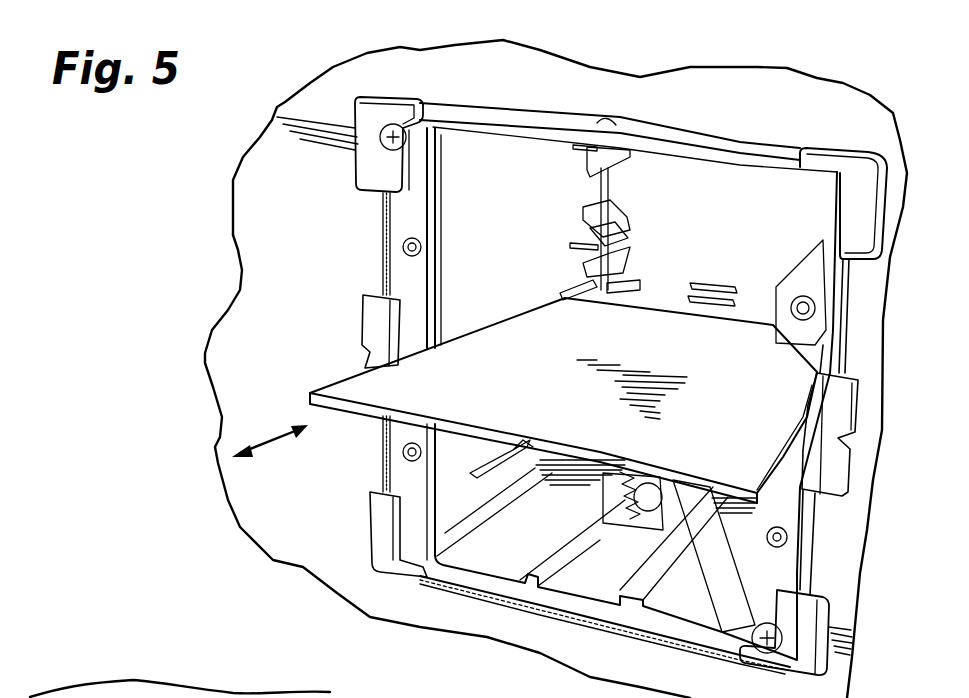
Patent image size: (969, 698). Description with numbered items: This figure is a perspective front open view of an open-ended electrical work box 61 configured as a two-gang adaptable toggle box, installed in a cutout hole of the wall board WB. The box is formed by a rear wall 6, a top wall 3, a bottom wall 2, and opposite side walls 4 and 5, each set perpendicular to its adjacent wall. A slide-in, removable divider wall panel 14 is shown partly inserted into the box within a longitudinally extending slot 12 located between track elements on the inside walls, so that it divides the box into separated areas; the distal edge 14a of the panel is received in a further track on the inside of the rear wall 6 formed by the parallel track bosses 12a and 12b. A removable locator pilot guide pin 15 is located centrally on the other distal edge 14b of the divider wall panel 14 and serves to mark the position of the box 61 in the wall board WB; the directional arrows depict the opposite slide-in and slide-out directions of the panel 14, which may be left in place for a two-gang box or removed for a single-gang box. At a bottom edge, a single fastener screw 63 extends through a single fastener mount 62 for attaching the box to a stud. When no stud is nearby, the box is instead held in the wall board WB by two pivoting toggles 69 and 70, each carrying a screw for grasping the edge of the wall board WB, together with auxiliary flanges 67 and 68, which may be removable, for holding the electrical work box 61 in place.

The bottom wall 2 is at (518, 549).
The top wall 3 is at (710, 135).
The side wall 4 is at (837, 352).
The side wall 5 is at (478, 194).
The rear wall 6 is at (723, 202).
The slot 12 is at (547, 295).
The track boss 12a is at (722, 283).
The track boss 12b is at (710, 311).
The slide-in removable divider wall panel 14 is at (305, 390).
The distal edge 14a is at (645, 290).
The distal edge 14b is at (353, 412).
The pilot guide pin 15 is at (487, 437).
The electrical work box 61 is at (442, 97).
The fastener mount 62 is at (680, 500).
The fastener screw 63 is at (617, 523).
The auxiliary flange 67 is at (373, 327).
The auxiliary flange 68 is at (827, 407).
The pivoting toggle 69 is at (363, 164).
The pivoting toggle 70 is at (792, 665).
The wall board WB is at (312, 259).